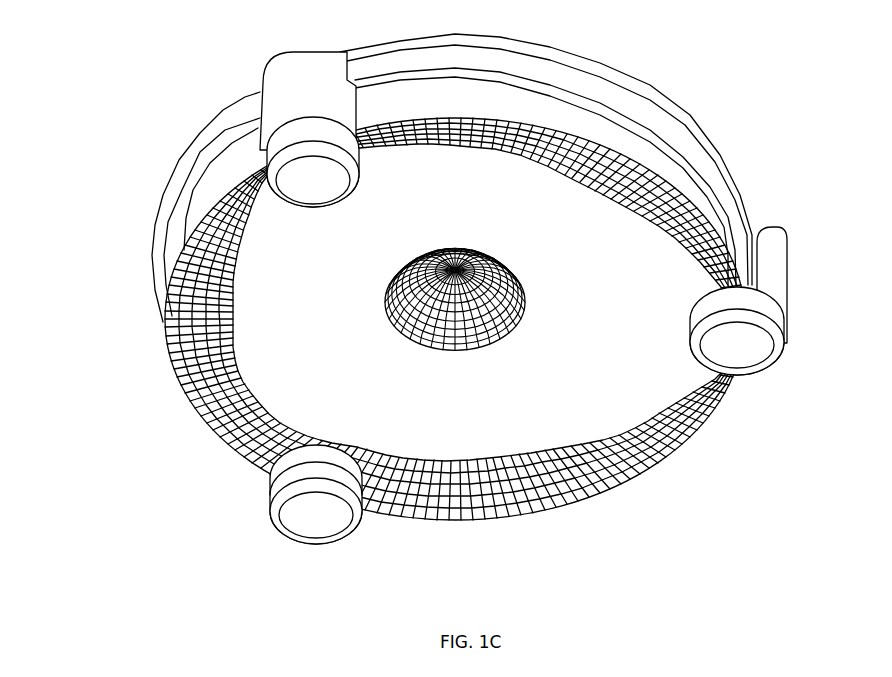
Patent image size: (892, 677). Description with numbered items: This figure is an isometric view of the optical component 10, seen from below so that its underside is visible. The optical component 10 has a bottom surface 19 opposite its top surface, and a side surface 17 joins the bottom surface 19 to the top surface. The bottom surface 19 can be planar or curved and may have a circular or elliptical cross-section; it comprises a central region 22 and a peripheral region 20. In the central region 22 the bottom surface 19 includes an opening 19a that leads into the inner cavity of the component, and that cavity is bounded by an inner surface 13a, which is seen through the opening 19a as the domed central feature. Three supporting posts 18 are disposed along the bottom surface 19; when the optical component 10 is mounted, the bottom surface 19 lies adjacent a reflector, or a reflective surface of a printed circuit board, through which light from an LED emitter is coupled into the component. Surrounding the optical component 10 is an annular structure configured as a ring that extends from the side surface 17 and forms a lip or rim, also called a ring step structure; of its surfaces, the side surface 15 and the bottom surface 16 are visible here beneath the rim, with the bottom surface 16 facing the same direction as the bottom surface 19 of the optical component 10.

The optical component 10 is at (190, 62).
The inner surface 13a is at (470, 352).
The side surface 15 is at (667, 120).
The bottom surface 16 is at (720, 185).
The side surface 17 is at (609, 137).
The supporting posts 18 is at (740, 350).
The bottom surface 19 is at (447, 412).
The opening 19a is at (443, 352).
The peripheral region 20 is at (258, 385).
The central region 22 is at (290, 274).